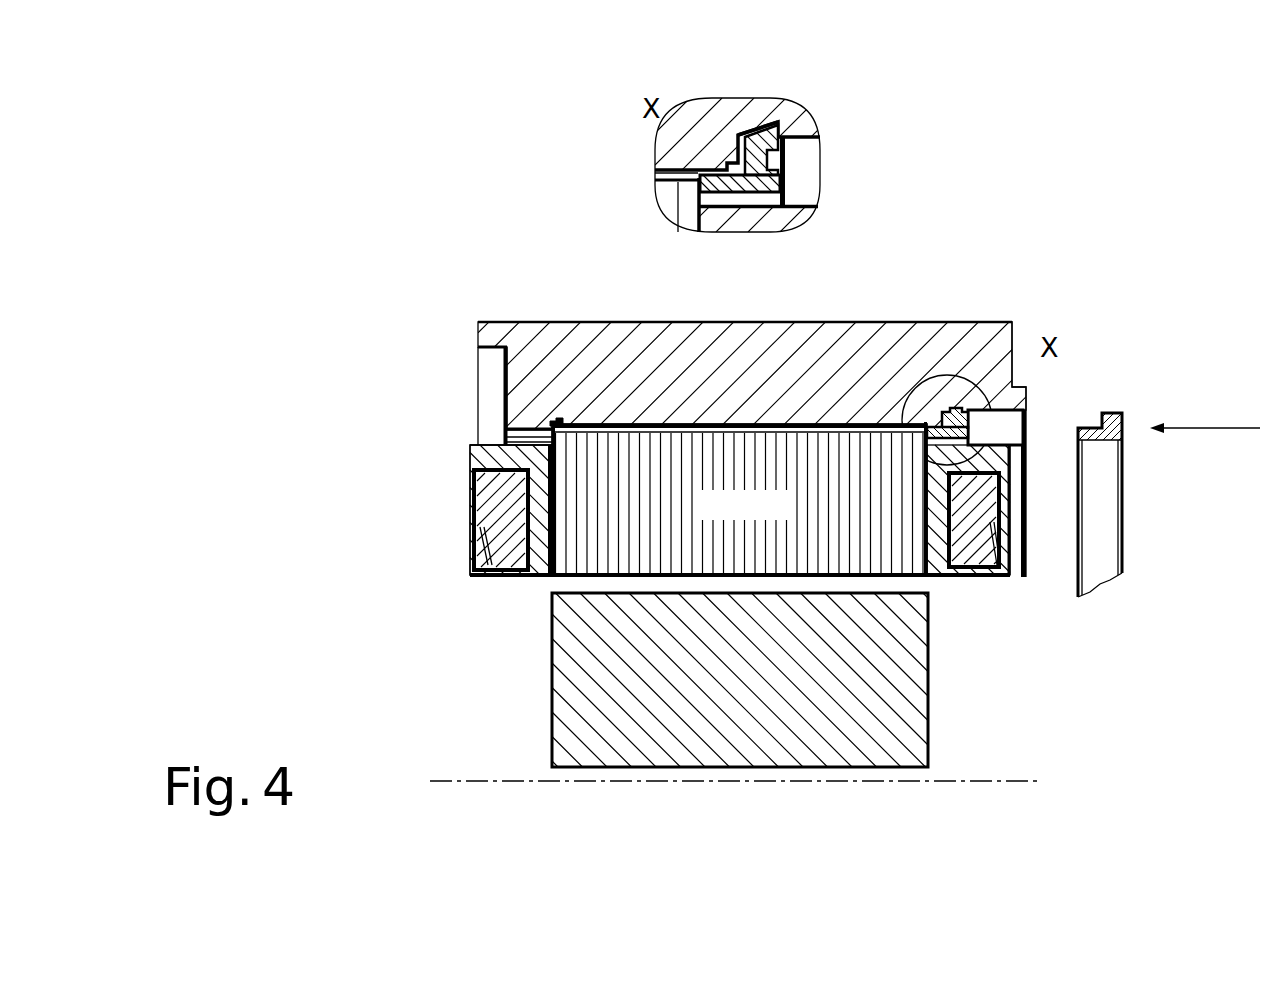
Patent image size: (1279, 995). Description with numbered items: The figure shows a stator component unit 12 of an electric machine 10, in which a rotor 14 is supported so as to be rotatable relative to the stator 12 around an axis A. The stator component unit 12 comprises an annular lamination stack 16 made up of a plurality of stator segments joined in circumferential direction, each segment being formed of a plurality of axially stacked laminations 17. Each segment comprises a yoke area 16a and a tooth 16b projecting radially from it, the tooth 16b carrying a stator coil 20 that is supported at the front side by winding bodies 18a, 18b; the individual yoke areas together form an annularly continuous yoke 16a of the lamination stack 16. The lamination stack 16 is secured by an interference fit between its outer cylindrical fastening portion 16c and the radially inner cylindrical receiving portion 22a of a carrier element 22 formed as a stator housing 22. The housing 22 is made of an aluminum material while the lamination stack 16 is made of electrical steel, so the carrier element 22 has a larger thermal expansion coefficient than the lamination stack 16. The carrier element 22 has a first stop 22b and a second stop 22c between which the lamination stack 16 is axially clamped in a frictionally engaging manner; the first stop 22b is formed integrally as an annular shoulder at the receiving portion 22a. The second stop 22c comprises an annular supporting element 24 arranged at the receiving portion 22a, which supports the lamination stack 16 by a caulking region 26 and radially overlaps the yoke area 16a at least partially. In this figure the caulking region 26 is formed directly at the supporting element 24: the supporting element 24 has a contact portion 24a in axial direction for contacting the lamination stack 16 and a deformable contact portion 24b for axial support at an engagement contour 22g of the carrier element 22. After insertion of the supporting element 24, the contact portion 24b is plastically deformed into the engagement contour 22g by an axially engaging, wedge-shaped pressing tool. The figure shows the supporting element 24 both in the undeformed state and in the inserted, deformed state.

The electric machine 10 is at (1020, 242).
The stator component unit 12 is at (405, 455).
The rotor 14 is at (552, 650).
The lamination stack 16 is at (672, 195).
The yoke area 16a is at (503, 433).
The tooth 16b is at (789, 517).
The outer cylindrical fastening portion 16c is at (686, 440).
The laminations 17 is at (582, 543).
The winding body 18a is at (468, 457).
The winding body 18b is at (1010, 452).
The stator coil 20 is at (495, 517).
The carrier element 22 is at (723, 127).
The receiving portion 22a is at (803, 422).
The first stop 22b is at (556, 419).
The second stop 22c is at (942, 400).
The engagement contour 22g is at (789, 127).
The supporting element 24 is at (980, 425).
The contact portion 24a is at (695, 192).
The deformable contact portion 24b is at (1125, 412).
The caulking region 26 is at (966, 390).
The axis A is at (1005, 782).